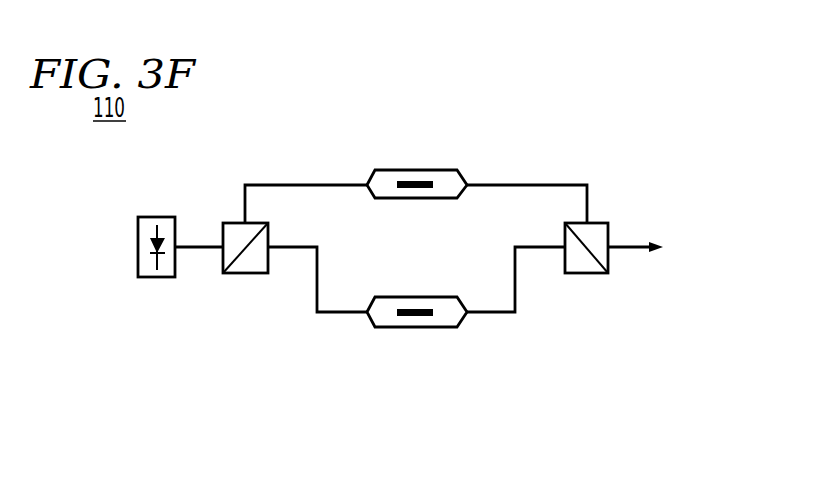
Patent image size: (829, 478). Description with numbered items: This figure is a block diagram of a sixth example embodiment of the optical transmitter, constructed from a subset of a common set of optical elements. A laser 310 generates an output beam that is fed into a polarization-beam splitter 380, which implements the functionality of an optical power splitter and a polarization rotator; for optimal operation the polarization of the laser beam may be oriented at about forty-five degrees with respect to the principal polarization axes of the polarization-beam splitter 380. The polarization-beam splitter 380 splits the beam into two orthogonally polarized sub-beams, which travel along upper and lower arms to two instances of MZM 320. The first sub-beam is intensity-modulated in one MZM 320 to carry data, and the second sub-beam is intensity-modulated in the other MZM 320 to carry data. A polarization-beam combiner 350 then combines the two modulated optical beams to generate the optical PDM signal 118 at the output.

The laser 310 is at (138, 246).
The polarization-beam splitter 380 is at (233, 223).
The MZM 320 is at (418, 162).
The polarization-beam combiner 350 is at (604, 223).
The optical PDM signal 118 is at (628, 252).